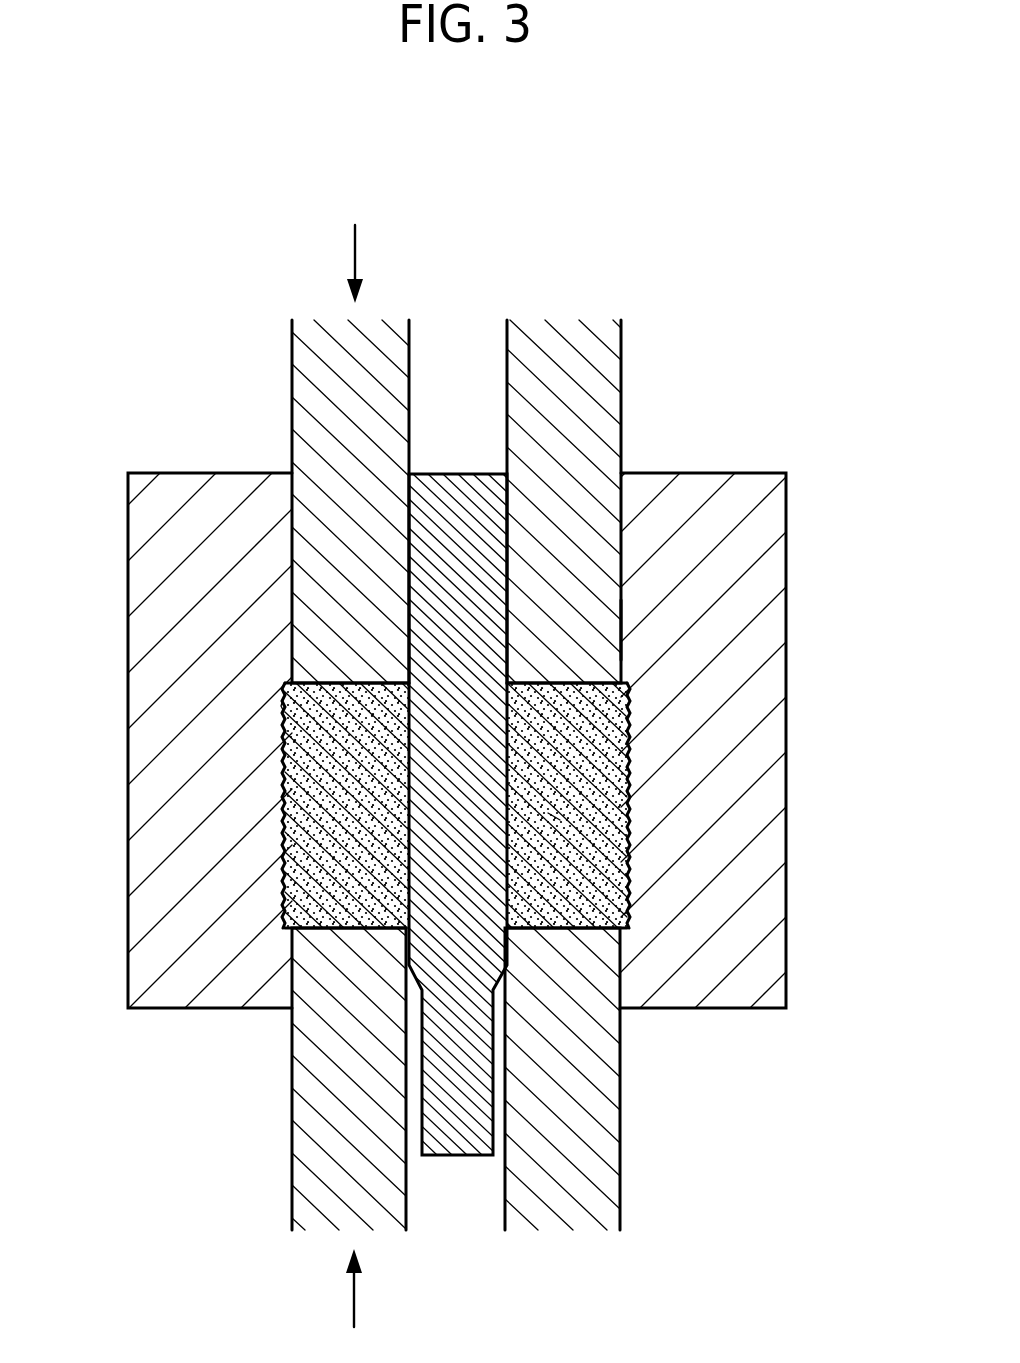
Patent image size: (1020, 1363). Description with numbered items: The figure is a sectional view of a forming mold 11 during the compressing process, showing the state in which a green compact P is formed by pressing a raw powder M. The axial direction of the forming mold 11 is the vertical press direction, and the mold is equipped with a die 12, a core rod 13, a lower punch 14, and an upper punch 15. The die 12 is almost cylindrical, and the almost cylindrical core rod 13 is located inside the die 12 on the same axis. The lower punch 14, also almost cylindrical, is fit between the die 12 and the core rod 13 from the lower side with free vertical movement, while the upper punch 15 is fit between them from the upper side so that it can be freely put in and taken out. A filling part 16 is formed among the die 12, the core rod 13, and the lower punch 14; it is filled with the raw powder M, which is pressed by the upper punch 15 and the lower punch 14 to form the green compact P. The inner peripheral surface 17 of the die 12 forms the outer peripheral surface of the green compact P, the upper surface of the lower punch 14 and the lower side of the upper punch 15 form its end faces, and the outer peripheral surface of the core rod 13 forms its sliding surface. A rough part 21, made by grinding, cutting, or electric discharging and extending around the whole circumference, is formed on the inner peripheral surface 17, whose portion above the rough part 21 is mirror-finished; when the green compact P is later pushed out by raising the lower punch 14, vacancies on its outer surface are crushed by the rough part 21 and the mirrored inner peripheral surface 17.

The forming mold 11 is at (647, 361).
The die 12 is at (747, 727).
The core rod 13 is at (461, 492).
The lower punch 14 is at (540, 1061).
The upper punch 15 is at (338, 402).
The filling part 16 is at (548, 812).
The inner peripheral surface 17 is at (622, 633).
The rough part 21 is at (286, 718).
The raw powder M is at (327, 808).
The green compact P is at (563, 680).